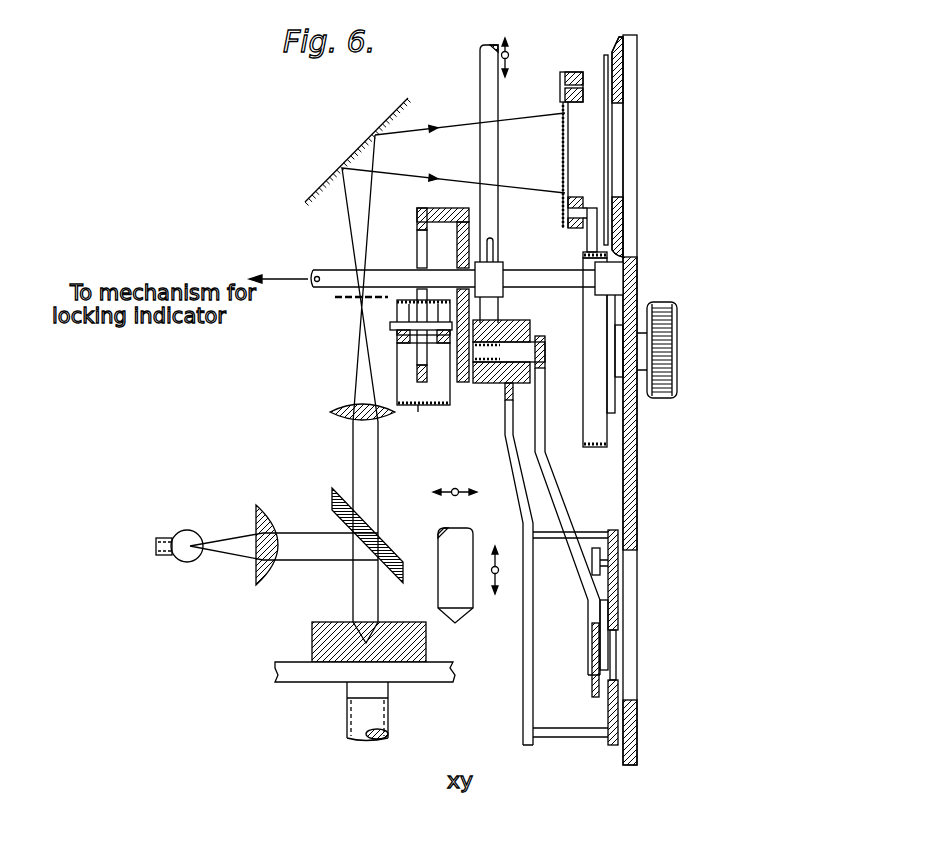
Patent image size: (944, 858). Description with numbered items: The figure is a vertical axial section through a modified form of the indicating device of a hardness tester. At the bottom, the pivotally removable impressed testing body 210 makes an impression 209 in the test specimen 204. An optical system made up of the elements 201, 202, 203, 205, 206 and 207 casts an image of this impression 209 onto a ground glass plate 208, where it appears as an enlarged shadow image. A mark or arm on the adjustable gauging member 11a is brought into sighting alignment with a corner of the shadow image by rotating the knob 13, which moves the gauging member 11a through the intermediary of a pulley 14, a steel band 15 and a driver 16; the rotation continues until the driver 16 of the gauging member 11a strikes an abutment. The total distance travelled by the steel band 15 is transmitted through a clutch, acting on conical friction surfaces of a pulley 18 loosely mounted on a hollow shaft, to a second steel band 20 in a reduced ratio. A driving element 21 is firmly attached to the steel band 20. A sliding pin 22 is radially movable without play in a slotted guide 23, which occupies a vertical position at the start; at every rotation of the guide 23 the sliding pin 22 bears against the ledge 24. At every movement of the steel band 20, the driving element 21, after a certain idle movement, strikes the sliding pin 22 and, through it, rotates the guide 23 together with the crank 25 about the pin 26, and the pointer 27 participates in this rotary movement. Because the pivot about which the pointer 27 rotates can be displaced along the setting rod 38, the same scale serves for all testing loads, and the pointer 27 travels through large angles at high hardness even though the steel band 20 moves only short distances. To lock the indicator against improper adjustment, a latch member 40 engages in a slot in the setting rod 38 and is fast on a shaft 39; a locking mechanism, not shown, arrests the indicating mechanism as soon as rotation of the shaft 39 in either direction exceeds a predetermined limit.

The gauging member 11a is at (568, 135).
The knob 13 is at (657, 302).
The pulley 14 is at (600, 432).
The steel band 15 is at (597, 452).
The driver 16 is at (590, 236).
The pulley 18 is at (447, 390).
The steel band 20 is at (418, 412).
The driving element 21 is at (443, 315).
The sliding pin 22 is at (400, 325).
The slotted guide 23 is at (417, 242).
The ledge 24 is at (397, 338).
The crank 25 is at (463, 244).
The pin 26 is at (522, 348).
The pointer 27 is at (545, 417).
The setting rod 38 is at (483, 85).
The shaft 39 is at (343, 275).
The latch member 40 is at (504, 271).
The optical system element (light source) 201 is at (187, 558).
The optical system element (lens) 202 is at (262, 582).
The optical system element 203 is at (380, 550).
The test specimen 204 is at (327, 655).
The optical system element (lens) 205 is at (340, 402).
The optical system element 206 is at (348, 299).
The optical system element (mirror) 207 is at (336, 182).
The ground glass plate 208 is at (561, 95).
The impression 209 is at (388, 632).
The impressed testing body 210 is at (465, 613).